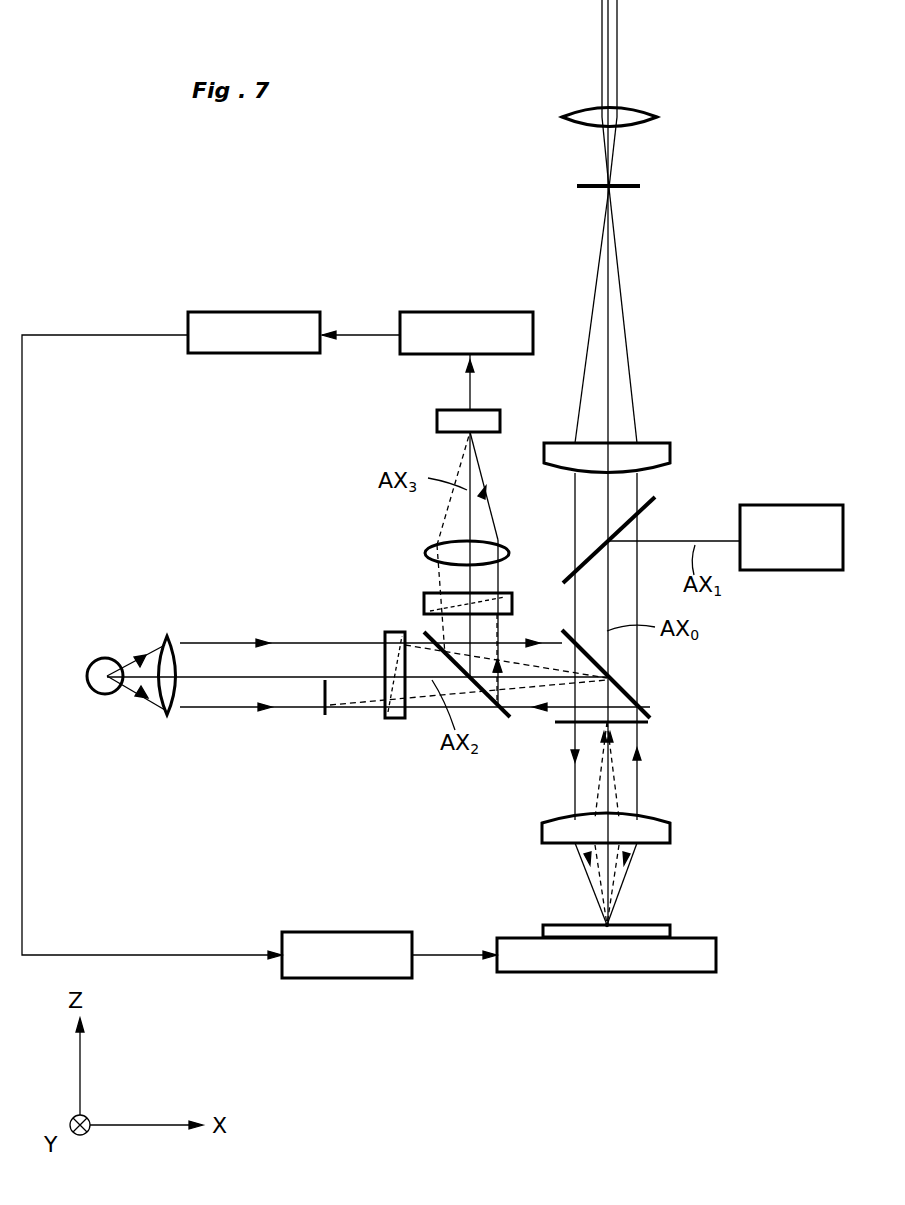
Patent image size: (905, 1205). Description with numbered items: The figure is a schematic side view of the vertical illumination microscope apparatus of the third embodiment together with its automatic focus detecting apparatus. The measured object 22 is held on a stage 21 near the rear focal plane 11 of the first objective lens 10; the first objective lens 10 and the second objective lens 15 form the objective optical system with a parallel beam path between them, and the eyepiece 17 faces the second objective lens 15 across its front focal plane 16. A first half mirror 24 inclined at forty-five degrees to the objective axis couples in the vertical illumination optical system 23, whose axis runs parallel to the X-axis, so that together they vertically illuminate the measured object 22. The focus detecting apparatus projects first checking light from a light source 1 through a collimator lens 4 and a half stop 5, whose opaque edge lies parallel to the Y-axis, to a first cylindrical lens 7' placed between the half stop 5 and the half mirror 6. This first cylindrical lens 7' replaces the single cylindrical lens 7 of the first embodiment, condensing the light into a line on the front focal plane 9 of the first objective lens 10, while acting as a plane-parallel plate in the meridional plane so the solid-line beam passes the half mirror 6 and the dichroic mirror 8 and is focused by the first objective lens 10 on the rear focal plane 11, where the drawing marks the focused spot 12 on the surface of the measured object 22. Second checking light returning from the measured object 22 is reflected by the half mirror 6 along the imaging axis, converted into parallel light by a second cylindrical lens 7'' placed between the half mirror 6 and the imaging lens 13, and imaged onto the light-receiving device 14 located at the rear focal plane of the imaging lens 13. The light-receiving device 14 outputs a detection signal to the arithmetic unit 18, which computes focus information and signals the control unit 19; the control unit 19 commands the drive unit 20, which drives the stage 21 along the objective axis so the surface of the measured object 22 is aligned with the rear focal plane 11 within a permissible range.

The light source 1 is at (100, 695).
The collimator lens 4 is at (168, 715).
The half stop 5 is at (325, 715).
The half mirror 6 is at (498, 710).
The cylindrical lens 7 is at (401, 710).
The first cylindrical lens 7' is at (401, 710).
The second cylindrical lens 7'' is at (434, 591).
The dichroic mirror 8 is at (650, 706).
The front focal plane of the first objective lens 9 is at (618, 727).
The first objective lens 10 is at (670, 832).
The rear focal plane of the first objective lens 11 is at (660, 925).
The focus spot 12 is at (597, 922).
The imaging lens 13 is at (430, 548).
The light-receiving device 14 is at (437, 420).
The second objective lens 15 is at (670, 452).
The front focal plane of the second objective lens 16 is at (640, 183).
The eyepiece 17 is at (655, 112).
The arithmetic unit 18 is at (492, 312).
The control unit 19 is at (285, 312).
The drive unit 20 is at (380, 932).
The stage 21 is at (716, 955).
The measured object 22 is at (672, 935).
The vertical illumination optical system 23 is at (795, 505).
The first half mirror 24 is at (650, 507).